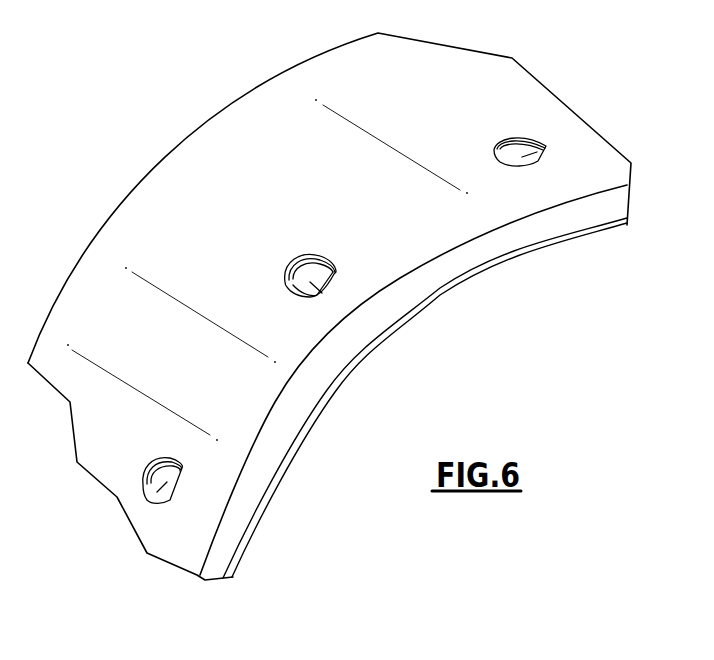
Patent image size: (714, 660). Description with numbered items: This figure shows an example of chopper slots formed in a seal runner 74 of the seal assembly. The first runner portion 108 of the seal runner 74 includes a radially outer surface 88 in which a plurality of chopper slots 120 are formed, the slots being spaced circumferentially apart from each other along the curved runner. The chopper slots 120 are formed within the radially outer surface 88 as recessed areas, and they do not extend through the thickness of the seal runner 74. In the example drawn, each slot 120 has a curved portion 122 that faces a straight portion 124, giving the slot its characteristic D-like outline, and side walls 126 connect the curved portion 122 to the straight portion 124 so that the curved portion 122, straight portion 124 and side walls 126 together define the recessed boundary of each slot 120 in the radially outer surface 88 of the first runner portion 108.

The seal runner 74 is at (481, 125).
The radially outer surface 88 is at (220, 203).
The first runner portion 108 is at (290, 408).
The chopper slots 120 is at (543, 146).
The curved portion 122 is at (287, 257).
The straight portion 124 is at (316, 284).
The side walls 126 is at (336, 272).